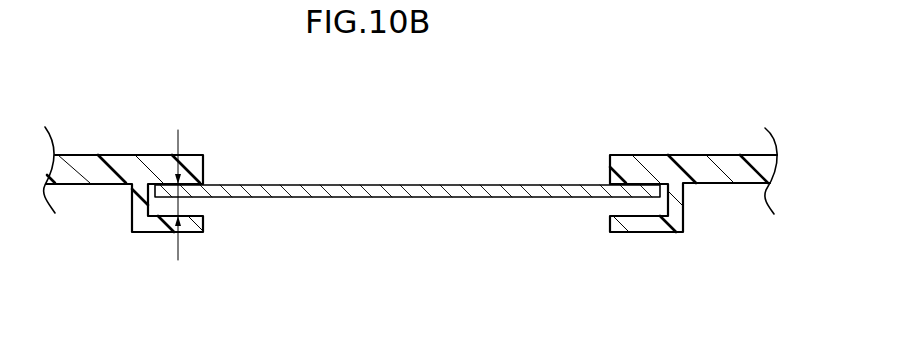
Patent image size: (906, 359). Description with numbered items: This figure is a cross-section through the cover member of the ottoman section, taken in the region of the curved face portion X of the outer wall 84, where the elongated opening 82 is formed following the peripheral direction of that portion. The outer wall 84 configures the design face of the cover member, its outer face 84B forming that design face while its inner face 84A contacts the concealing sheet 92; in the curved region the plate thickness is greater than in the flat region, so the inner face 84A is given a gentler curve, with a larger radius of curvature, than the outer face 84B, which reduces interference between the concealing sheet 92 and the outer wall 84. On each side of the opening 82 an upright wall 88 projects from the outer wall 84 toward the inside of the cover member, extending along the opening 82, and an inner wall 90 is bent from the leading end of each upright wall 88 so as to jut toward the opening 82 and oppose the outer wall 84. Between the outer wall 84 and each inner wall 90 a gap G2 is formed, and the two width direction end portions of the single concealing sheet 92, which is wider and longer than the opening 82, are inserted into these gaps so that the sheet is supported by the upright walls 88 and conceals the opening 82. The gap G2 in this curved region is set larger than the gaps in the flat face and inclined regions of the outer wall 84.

The curved face portion X is at (501, 125).
The outer wall 84 is at (80, 153).
The inner face 84A is at (80, 187).
The outer face 84B is at (146, 154).
The opening 82 is at (610, 170).
The upright wall 88 is at (683, 210).
The inner wall 90 is at (625, 233).
The concealing sheet 92 is at (397, 198).
The gap G2 is at (183, 207).